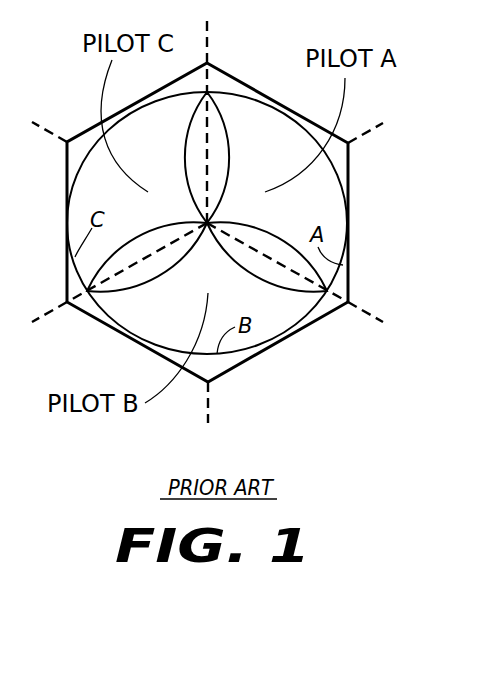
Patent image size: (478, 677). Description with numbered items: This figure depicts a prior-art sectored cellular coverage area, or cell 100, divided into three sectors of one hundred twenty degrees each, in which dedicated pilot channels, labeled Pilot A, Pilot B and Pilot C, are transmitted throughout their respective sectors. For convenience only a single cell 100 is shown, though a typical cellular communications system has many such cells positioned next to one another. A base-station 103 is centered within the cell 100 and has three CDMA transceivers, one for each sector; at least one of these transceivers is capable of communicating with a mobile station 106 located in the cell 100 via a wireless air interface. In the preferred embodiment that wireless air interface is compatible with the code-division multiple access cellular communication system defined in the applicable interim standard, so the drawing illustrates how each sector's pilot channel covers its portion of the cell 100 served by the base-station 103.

The cell 100 is at (348, 281).
The base-station 103 is at (165, 352).
The mobile station 106 is at (247, 201).